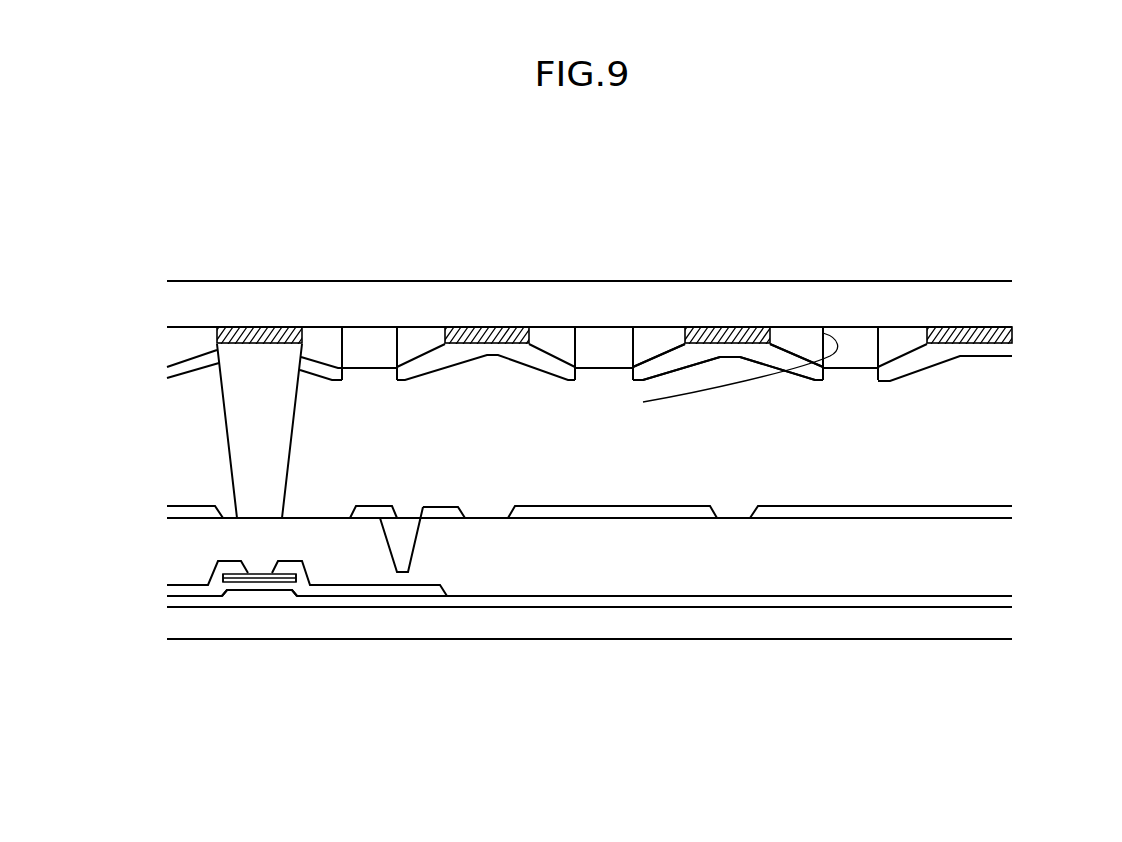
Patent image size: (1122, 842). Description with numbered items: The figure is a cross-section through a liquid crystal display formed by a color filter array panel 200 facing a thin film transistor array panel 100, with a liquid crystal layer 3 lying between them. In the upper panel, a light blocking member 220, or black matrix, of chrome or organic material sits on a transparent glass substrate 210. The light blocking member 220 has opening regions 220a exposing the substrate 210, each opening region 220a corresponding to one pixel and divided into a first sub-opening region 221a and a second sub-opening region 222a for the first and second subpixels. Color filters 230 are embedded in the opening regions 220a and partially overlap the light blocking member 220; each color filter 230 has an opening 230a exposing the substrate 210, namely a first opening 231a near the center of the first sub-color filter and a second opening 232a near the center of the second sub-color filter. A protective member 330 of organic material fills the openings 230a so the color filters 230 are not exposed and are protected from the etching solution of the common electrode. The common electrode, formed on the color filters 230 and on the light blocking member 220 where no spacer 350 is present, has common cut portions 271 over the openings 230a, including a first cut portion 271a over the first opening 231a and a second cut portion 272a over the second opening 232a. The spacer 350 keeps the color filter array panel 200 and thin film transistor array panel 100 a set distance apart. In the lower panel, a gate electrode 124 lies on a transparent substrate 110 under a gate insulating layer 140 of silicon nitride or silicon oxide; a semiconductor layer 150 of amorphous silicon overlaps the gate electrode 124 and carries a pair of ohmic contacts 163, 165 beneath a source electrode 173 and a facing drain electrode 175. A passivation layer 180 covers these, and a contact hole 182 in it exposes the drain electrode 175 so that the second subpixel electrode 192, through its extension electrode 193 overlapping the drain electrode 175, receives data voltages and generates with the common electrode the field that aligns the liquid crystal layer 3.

The liquid crystal layer 3 is at (575, 431).
The thin film transistor array panel 100 is at (598, 615).
The substrate 110 is at (771, 625).
The gate electrode 124 is at (260, 601).
The gate insulating layer 140 is at (853, 597).
The semiconductor layer 150 is at (239, 592).
The ohmic contact 163 is at (236, 580).
The ohmic contact 165 is at (295, 583).
The source electrode 173 is at (227, 565).
The drain electrode 175 is at (357, 587).
The passivation layer 180 is at (658, 568).
The contact hole 182 is at (388, 542).
The second subpixel electrode 192 is at (598, 512).
The extension electrode 193 is at (453, 510).
The color filter array panel 200 is at (622, 343).
The substrate 210 is at (440, 292).
The light blocking member 220 is at (266, 340).
The opening region 220a is at (625, 273).
The first sub-opening region 221a is at (740, 291).
The second sub-opening region 222a is at (529, 334).
The color filter 230 is at (905, 342).
The opening 230a is at (677, 415).
The first opening 231a is at (721, 401).
The second opening 232a is at (578, 347).
The common cut portion 271 is at (751, 408).
The first cut portion 271a is at (677, 442).
The second cut portion 272a is at (697, 393).
The protective member 330 is at (366, 342).
The spacer 350 is at (243, 480).